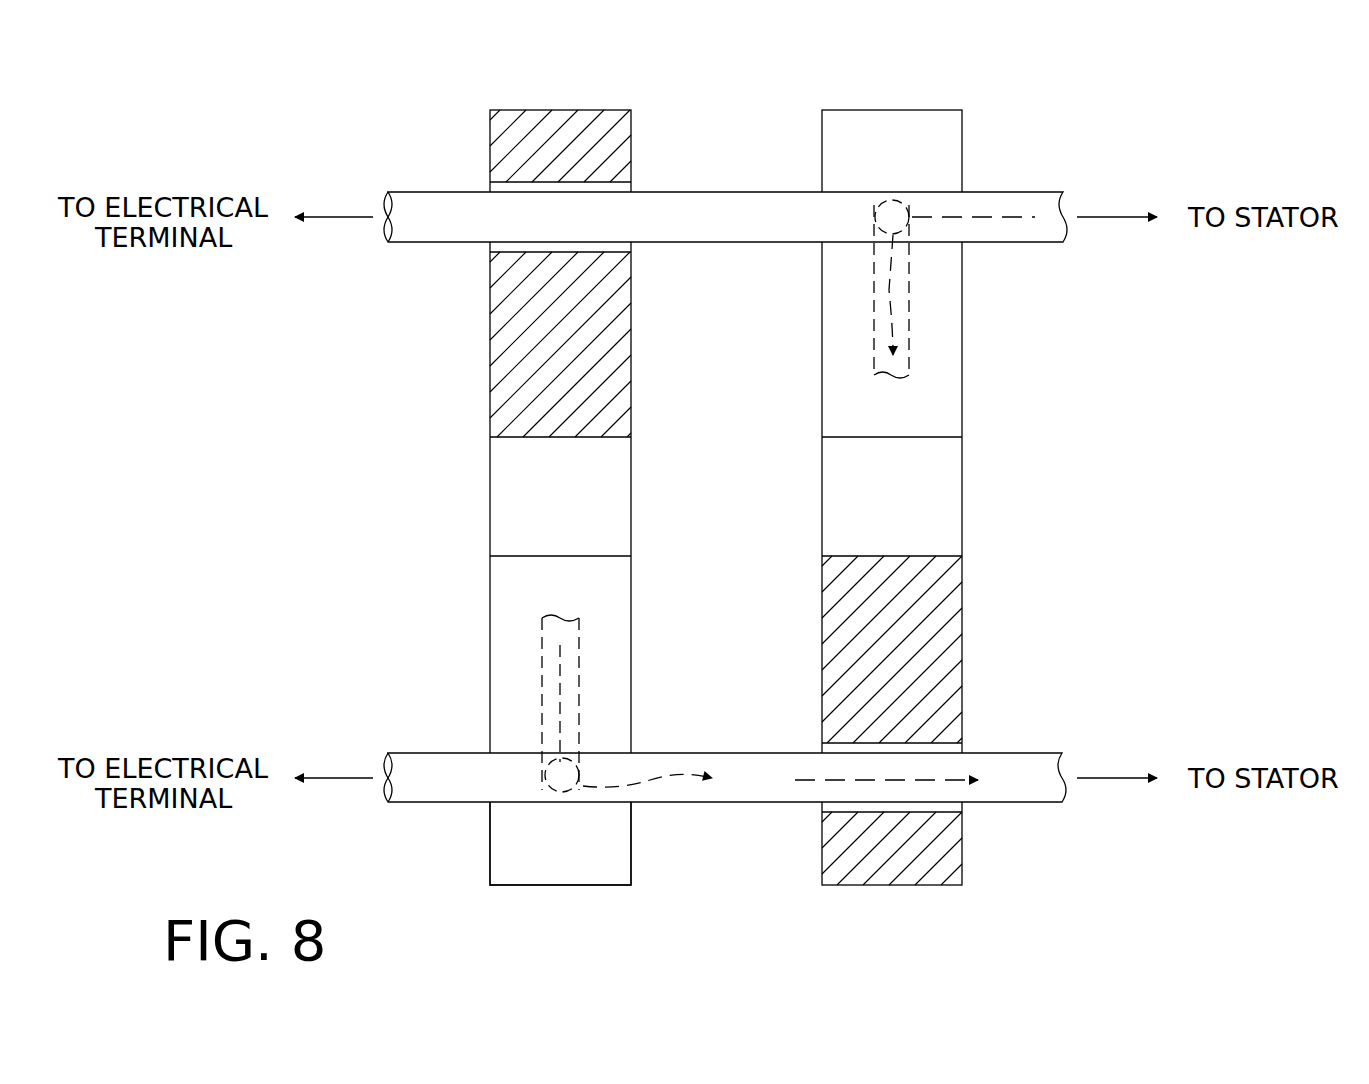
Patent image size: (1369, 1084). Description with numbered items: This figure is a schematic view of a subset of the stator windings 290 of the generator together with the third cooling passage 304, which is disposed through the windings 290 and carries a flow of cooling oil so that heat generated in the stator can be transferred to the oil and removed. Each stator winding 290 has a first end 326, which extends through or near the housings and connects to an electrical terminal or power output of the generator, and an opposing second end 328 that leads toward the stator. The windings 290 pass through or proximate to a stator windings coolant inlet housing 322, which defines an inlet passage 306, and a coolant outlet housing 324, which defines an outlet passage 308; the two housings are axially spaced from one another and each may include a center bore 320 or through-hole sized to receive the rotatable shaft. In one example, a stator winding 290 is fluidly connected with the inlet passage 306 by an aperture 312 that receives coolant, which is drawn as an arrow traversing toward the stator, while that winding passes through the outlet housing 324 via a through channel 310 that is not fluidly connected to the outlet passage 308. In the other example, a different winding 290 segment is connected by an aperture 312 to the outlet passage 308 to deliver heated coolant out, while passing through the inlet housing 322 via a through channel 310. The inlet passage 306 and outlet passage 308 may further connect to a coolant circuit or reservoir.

The stator windings 290 is at (670, 192).
The third cooling passage 304 is at (1026, 87).
The inlet passage 306 is at (542, 683).
The outlet passage 308 is at (912, 340).
The through channel 310 is at (483, 181).
The aperture 312 is at (898, 200).
The center bore 320 is at (484, 522).
The stator windings coolant inlet housing 322 is at (578, 870).
The stator windings coolant outlet housing 324 is at (870, 865).
The first end 326 is at (379, 811).
The second end 328 is at (381, 181).